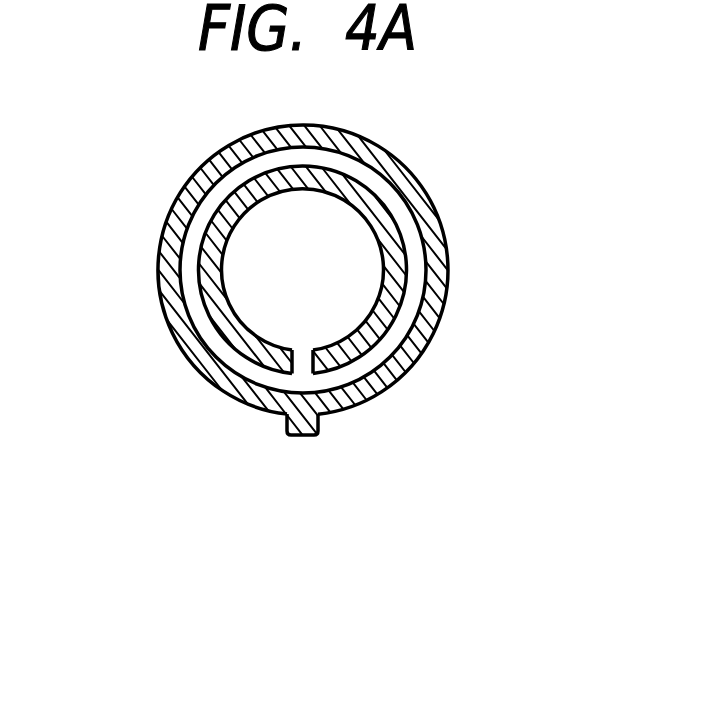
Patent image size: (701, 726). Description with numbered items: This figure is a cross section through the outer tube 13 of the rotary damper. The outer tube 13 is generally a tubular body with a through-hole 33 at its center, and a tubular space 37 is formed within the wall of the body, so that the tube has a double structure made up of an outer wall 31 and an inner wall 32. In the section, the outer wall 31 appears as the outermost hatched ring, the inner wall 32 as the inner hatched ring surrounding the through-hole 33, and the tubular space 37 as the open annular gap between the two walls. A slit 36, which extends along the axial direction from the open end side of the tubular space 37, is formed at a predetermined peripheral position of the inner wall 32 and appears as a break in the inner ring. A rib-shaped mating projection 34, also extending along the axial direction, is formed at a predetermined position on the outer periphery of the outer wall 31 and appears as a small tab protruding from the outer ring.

The outer tube 13 is at (138, 198).
The outer wall 31 is at (425, 322).
The inner wall 32 is at (374, 199).
The through-hole 33 is at (270, 270).
The mating projection 34 is at (303, 432).
The slit 36 is at (302, 363).
The tubular space 37 is at (415, 248).